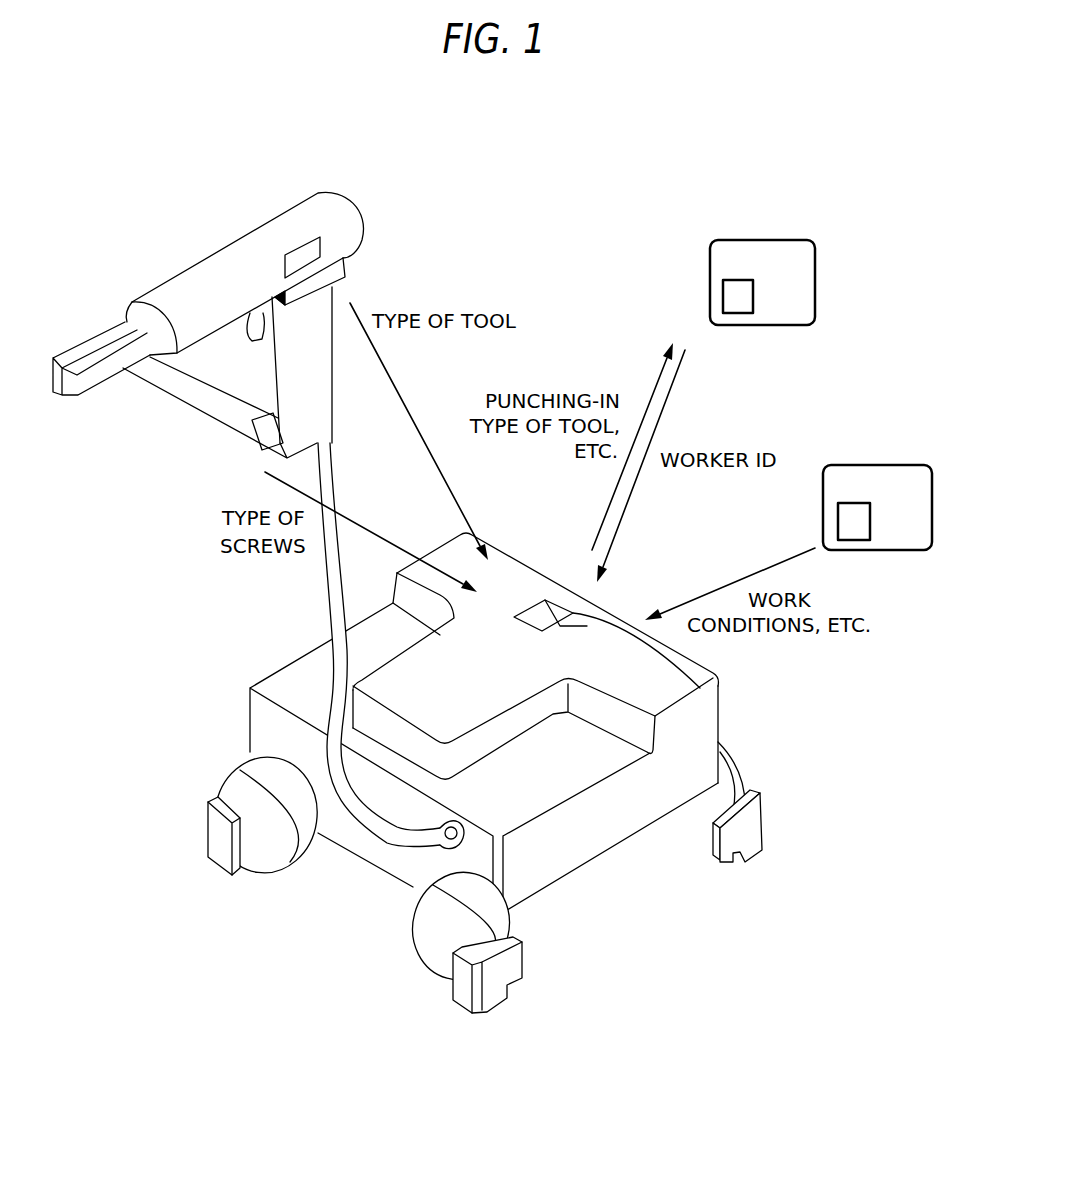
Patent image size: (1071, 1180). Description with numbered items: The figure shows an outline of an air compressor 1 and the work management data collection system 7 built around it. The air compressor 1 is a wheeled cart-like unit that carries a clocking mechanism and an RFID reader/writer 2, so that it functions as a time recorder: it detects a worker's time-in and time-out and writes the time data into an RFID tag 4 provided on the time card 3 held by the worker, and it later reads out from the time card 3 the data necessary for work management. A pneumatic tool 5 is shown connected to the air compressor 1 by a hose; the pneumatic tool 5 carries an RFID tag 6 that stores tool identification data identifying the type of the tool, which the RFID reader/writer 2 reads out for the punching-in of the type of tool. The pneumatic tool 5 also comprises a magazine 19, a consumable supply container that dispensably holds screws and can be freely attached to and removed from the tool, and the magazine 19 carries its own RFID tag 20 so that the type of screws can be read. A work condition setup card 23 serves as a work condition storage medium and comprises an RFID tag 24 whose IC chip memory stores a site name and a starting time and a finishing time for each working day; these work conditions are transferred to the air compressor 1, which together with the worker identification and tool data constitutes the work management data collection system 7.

The air compressor 1 is at (605, 838).
The RFID reader/writer 2 is at (702, 686).
The time card 3 is at (744, 252).
The RFID tag 4 is at (728, 297).
The pneumatic tool 5 is at (230, 317).
The RFID tag 6 is at (322, 247).
The work management data collection system 7 is at (556, 201).
The magazine 19 is at (220, 417).
The RFID tag 20 is at (260, 437).
The work condition setup card 23 is at (852, 478).
The RFID tag 24 is at (843, 522).